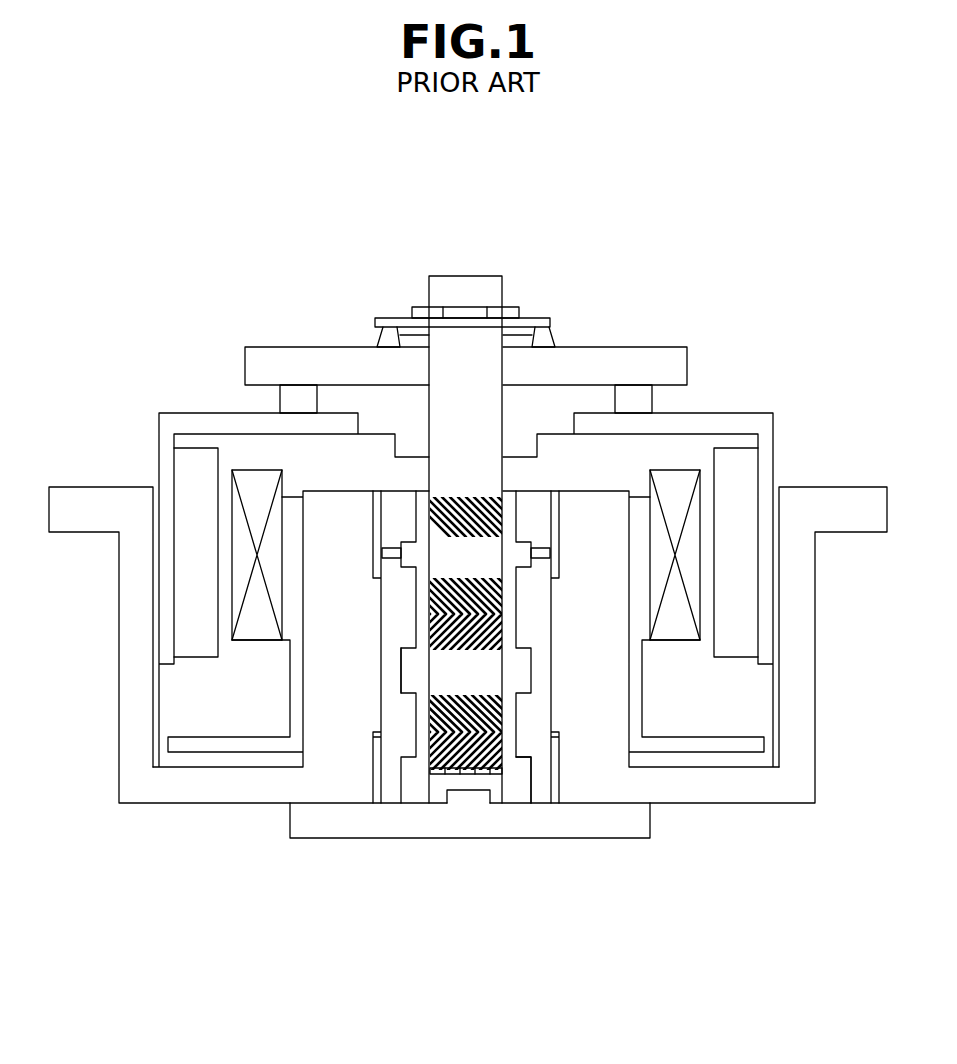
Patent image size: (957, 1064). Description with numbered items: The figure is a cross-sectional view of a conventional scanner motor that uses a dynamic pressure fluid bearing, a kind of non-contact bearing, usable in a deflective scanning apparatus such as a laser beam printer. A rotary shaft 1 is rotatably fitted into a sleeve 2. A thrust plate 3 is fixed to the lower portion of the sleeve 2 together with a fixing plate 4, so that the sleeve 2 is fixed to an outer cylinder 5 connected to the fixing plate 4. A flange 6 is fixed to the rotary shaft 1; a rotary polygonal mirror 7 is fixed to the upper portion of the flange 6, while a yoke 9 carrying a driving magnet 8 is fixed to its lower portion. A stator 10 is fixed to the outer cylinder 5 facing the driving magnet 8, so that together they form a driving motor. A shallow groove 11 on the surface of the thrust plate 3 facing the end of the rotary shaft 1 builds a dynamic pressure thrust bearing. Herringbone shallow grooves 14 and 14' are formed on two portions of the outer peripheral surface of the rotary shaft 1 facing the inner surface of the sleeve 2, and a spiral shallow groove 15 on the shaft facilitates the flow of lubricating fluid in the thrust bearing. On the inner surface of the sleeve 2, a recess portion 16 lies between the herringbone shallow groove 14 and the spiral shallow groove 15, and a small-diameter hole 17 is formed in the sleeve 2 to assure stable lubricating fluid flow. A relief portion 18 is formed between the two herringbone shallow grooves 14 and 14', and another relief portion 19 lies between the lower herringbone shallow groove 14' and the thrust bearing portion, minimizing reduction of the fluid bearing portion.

The rotary shaft 1 is at (471, 292).
The sleeve 2 is at (535, 702).
The thrust plate 3 is at (440, 775).
The fixing plate 4 is at (322, 822).
The outer cylinder 5 is at (165, 778).
The flange 6 is at (378, 405).
The rotary polygonal mirror 7 is at (653, 372).
The driving magnet 8 is at (737, 493).
The yoke 9 is at (752, 428).
The stator 10 is at (673, 615).
The shallow groove 11 is at (478, 775).
The herringbone shallow groove 14 is at (300, 578).
The lower herringbone shallow groove 14' is at (437, 802).
The spiral shallow groove 15 is at (430, 517).
The recess portion 16 is at (520, 543).
The small-diameter hole 17 is at (545, 550).
The relief portion 18 is at (412, 670).
The relief portion 19 is at (517, 783).